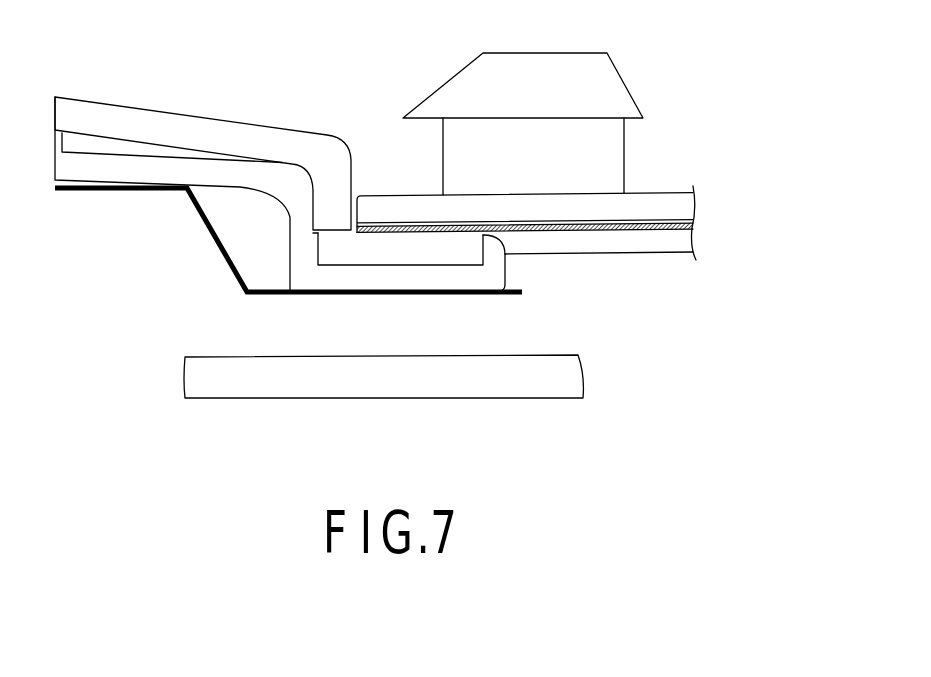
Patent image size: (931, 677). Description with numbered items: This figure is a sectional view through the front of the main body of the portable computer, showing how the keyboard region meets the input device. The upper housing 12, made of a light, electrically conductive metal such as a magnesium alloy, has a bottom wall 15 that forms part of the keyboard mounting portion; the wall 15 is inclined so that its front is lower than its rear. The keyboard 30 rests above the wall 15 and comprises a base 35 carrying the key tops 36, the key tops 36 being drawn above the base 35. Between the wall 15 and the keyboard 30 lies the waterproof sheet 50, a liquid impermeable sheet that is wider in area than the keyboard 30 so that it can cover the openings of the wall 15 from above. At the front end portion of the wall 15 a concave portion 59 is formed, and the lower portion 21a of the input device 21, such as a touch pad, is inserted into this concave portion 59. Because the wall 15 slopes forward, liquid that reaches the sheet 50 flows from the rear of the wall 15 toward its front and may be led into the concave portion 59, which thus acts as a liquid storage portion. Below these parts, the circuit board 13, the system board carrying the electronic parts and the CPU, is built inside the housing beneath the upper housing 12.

The upper housing 12 is at (213, 170).
The circuit board 13 is at (392, 400).
The bottom wall 15 is at (676, 250).
The input device 21 is at (75, 97).
The lower portion of input device 21a is at (352, 182).
The keyboard 30 is at (677, 182).
The base 35 is at (673, 207).
The key tops 36 is at (607, 88).
The waterproof sheet 50 is at (568, 236).
The concave portion 59 is at (452, 259).